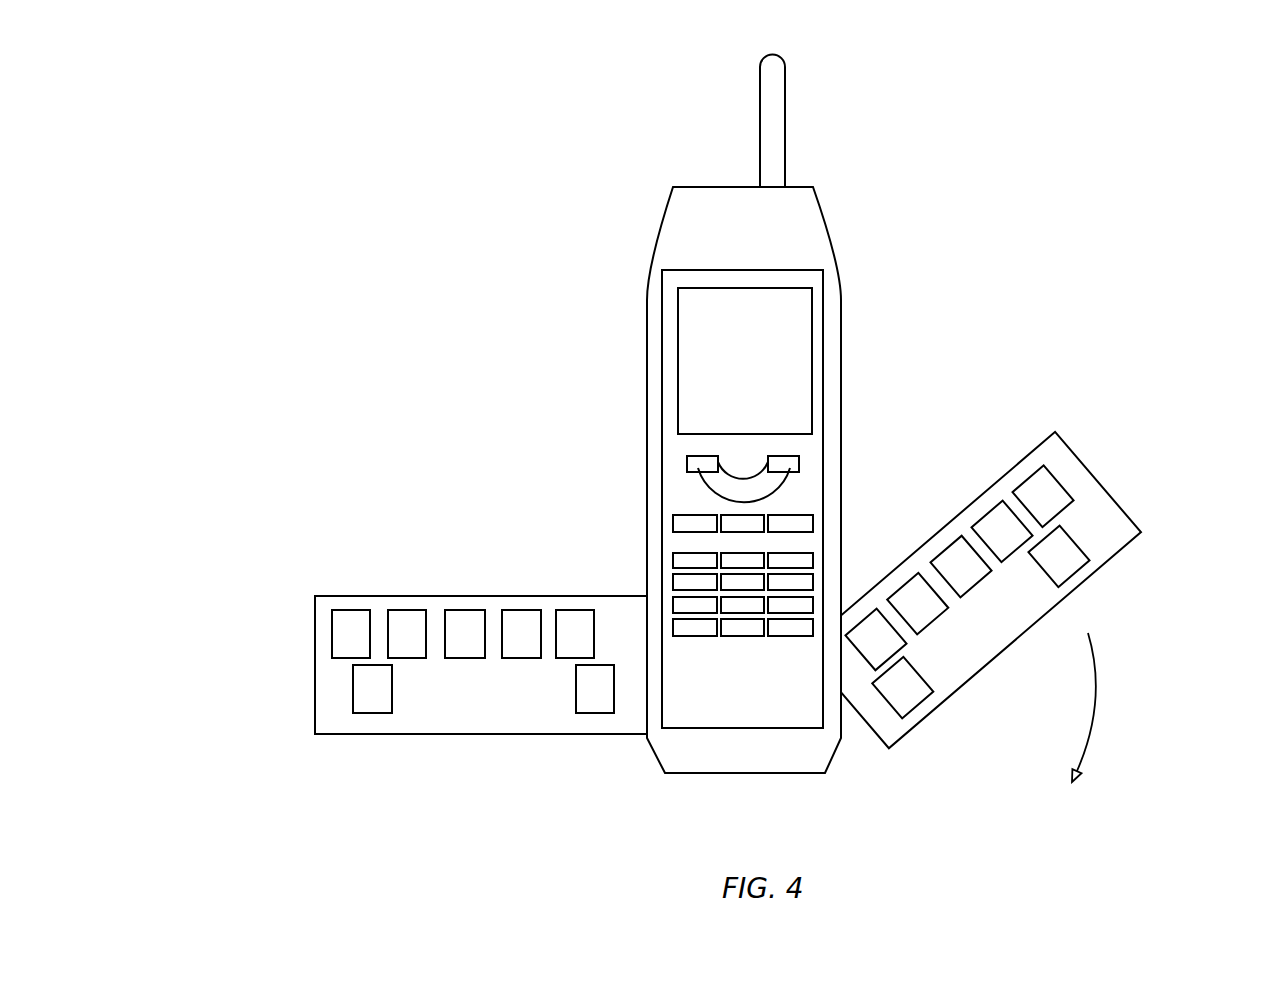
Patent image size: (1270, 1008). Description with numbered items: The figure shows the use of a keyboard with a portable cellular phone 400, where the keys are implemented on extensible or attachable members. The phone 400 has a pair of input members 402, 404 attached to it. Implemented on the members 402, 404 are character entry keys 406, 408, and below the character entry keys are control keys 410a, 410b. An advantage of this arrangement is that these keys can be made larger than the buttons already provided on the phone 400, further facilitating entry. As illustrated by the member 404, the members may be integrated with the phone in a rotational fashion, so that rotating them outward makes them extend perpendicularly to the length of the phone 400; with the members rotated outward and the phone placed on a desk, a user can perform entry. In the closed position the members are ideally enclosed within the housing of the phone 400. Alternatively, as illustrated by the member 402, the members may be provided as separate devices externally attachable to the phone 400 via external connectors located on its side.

The cellular phone 400 is at (861, 155).
The input member 402 is at (415, 678).
The input member 404 is at (1016, 553).
The character entry keys 406 is at (441, 597).
The character entry keys 408 is at (1062, 465).
The control keys 410a is at (324, 683).
The control keys 410b is at (1093, 529).